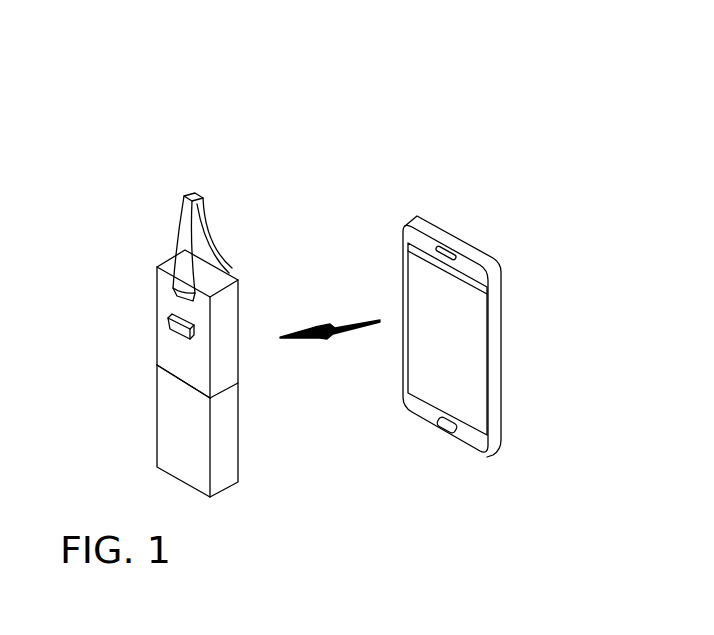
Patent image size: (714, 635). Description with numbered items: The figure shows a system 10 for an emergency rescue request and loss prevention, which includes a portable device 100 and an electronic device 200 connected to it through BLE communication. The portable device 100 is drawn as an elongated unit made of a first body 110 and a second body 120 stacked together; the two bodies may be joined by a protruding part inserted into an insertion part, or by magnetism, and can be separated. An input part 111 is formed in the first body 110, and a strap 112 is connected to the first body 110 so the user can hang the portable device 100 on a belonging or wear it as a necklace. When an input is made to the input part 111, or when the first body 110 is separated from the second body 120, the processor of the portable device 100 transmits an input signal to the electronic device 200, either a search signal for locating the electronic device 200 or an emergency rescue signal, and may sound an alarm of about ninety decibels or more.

The system 10 is at (475, 108).
The portable device 100 is at (131, 360).
The first body 110 is at (161, 340).
The input part 111 is at (167, 320).
The strap 112 is at (193, 217).
The second body 120 is at (165, 437).
The electronic device 200 is at (509, 312).